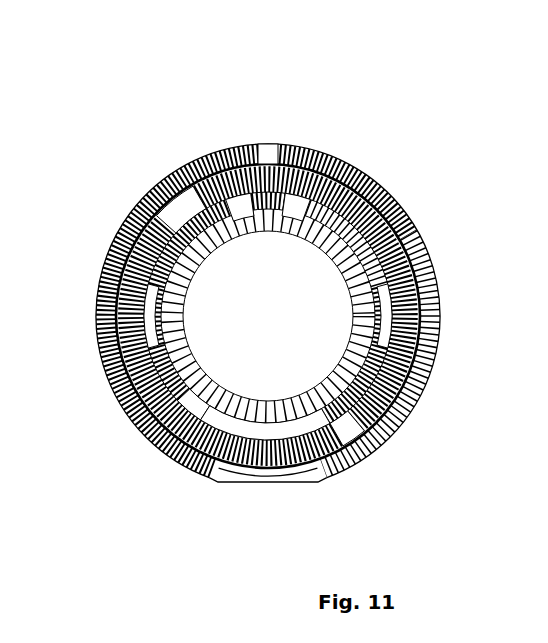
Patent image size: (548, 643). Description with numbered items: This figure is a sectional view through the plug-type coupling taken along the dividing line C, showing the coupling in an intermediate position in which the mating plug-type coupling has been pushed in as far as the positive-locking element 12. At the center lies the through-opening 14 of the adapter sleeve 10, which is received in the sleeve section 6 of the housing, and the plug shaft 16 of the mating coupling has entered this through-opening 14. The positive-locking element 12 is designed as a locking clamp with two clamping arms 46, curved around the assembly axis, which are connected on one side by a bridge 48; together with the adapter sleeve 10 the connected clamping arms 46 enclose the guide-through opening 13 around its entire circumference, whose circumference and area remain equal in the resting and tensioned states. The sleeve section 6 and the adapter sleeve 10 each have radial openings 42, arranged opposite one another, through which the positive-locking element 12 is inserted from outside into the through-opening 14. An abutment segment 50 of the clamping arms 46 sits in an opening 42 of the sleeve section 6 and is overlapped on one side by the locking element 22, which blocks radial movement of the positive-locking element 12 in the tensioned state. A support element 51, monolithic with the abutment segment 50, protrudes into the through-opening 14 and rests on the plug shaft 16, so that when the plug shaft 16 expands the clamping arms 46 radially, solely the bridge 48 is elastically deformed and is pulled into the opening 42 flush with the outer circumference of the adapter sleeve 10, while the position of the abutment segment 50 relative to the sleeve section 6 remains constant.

The dividing line C- C is at (222, 124).
The sleeve section 6 is at (402, 344).
The adapter sleeve 10 is at (393, 316).
The positive-locking element 12 is at (186, 178).
The guide-through opening 13 is at (198, 270).
The through-opening 14 is at (261, 308).
The plug shaft 16 is at (318, 388).
The locking element 22 is at (400, 395).
The opening 42 is at (178, 184).
The clamping arms 46 is at (148, 308).
The bridge 48 is at (331, 428).
The abutment segment 50 is at (340, 185).
The support element 51 is at (268, 205).